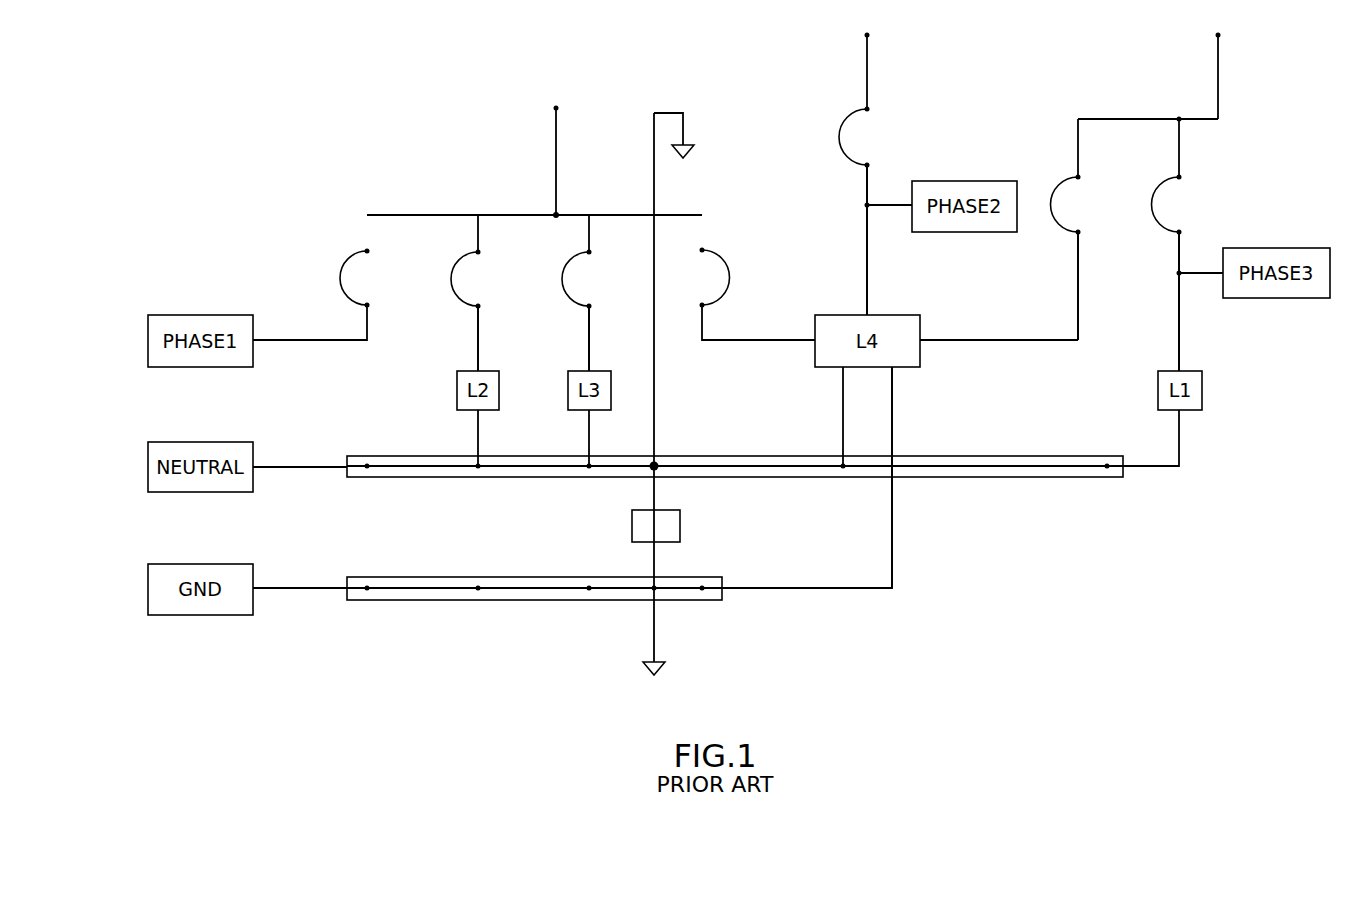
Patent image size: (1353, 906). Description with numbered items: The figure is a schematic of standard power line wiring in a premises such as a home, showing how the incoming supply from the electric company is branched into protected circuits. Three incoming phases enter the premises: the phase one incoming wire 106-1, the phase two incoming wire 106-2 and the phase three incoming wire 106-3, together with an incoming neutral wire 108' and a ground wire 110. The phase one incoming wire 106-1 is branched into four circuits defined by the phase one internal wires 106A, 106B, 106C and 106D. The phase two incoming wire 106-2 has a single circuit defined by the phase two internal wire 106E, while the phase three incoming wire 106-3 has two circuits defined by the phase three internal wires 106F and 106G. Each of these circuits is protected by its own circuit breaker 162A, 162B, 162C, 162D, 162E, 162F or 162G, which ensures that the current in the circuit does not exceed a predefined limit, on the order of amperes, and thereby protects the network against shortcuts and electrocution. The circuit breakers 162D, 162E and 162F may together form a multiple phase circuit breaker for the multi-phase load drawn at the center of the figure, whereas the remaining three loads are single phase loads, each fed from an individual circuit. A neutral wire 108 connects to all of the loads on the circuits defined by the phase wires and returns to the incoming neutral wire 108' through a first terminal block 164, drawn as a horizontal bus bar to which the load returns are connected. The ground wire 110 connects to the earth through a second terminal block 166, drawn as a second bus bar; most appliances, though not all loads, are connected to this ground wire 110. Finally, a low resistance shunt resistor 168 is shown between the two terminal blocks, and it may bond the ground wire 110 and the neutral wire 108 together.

The phase 1 incoming wire 106-1 is at (556, 140).
The phase 2 incoming wire 106-2 is at (867, 62).
The phase 3 incoming wire 106-3 is at (1218, 88).
The circuit breaker 162A is at (367, 251).
The circuit breaker 162B is at (478, 252).
The circuit breaker 162C is at (589, 252).
The circuit breaker 162D is at (725, 280).
The circuit breaker 162E is at (867, 109).
The circuit breaker 162F is at (1078, 177).
The circuit breaker 162G is at (1179, 177).
The phase 1 internal wire 106A is at (320, 342).
The phase 1 internal wire 106B is at (478, 320).
The phase 1 internal wire 106C is at (589, 320).
The phase 1 internal wire 106D is at (712, 345).
The phase 2 internal wire 106E is at (867, 180).
The phase 3 internal wire 106F is at (1082, 292).
The phase 3 internal wire 106G is at (1179, 323).
The first terminal block 164 is at (688, 455).
The second terminal block 166 is at (590, 600).
The shunt resistor 168 is at (680, 526).
The incoming neutral wire 108' is at (696, 394).
The neutral wire 108 is at (1173, 493).
The ground wire 110 is at (755, 590).